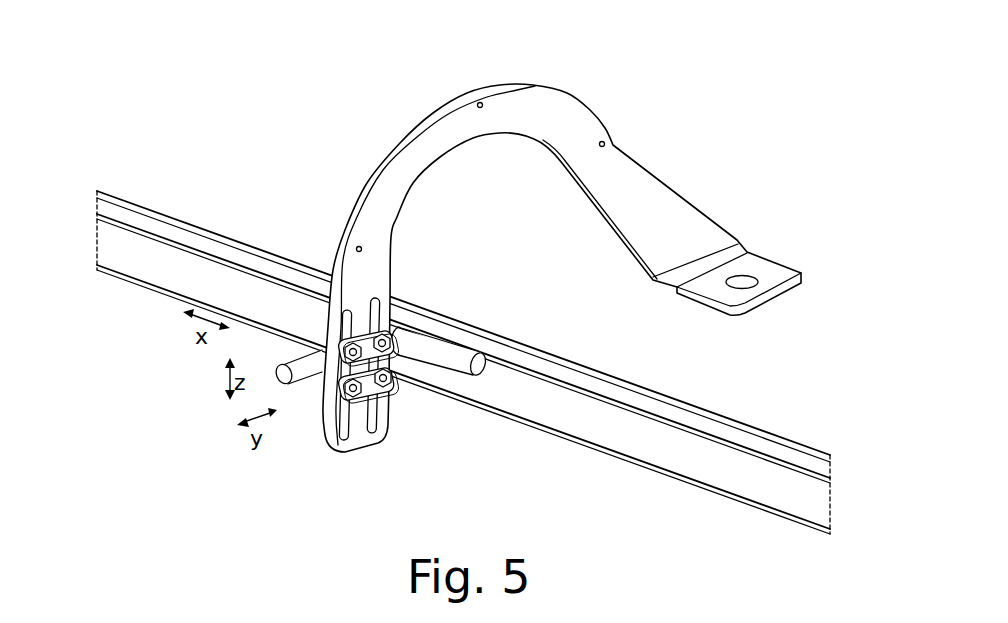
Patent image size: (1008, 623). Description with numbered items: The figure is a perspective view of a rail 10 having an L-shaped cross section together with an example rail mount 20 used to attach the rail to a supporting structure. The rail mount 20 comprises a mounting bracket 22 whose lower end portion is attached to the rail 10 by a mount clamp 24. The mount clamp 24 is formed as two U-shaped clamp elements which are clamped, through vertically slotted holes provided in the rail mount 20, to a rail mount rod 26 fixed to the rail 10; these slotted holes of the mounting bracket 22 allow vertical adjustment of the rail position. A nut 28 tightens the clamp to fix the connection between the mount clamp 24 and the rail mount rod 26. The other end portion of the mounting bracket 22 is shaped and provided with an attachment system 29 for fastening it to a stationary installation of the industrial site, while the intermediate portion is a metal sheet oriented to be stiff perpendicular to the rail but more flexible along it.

The rail 10 is at (594, 428).
The rail mount 20 is at (381, 81).
The mounting bracket 22 is at (563, 112).
The mount clamp 24 is at (318, 350).
The rail mount rod 26 is at (308, 371).
The nut 28 is at (386, 391).
The attachment system 29 is at (767, 245).